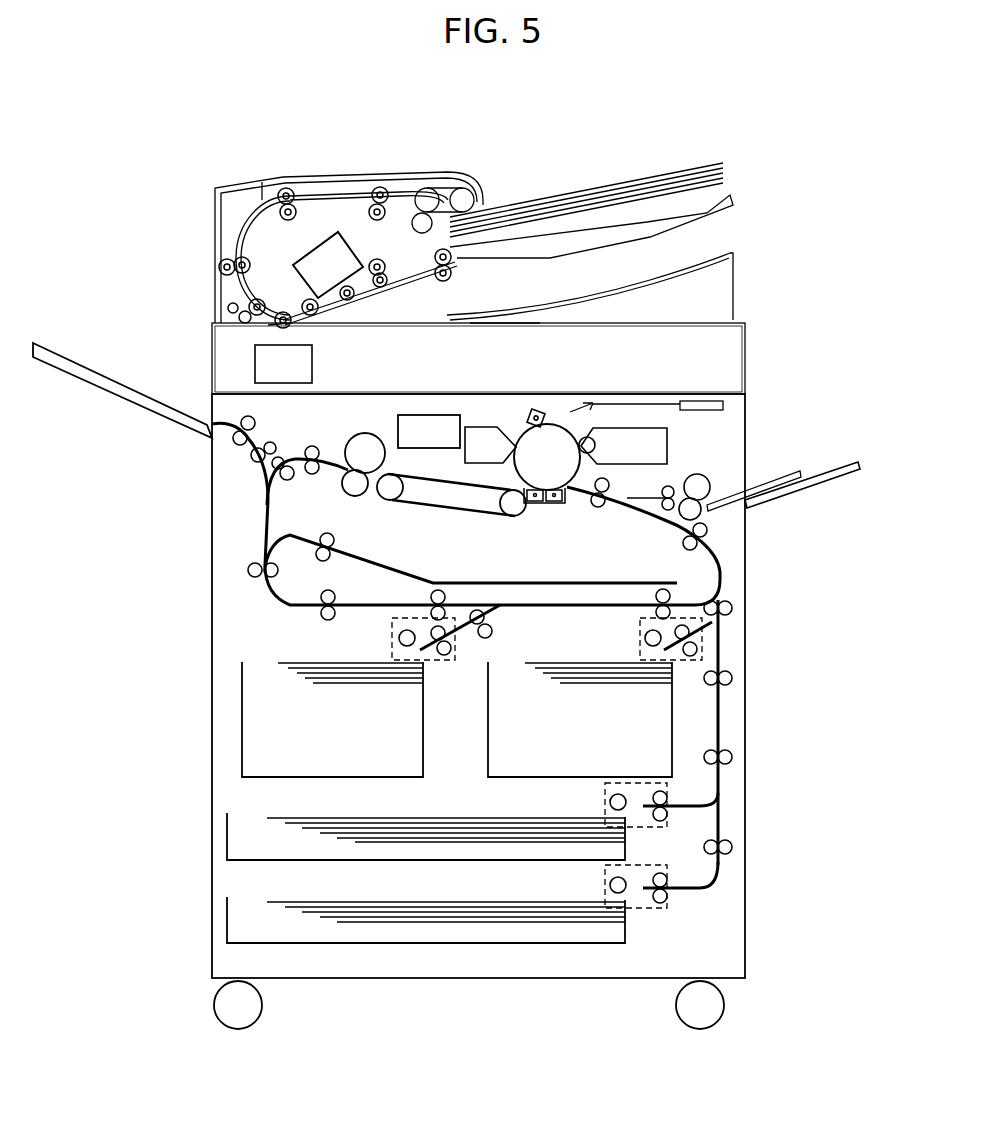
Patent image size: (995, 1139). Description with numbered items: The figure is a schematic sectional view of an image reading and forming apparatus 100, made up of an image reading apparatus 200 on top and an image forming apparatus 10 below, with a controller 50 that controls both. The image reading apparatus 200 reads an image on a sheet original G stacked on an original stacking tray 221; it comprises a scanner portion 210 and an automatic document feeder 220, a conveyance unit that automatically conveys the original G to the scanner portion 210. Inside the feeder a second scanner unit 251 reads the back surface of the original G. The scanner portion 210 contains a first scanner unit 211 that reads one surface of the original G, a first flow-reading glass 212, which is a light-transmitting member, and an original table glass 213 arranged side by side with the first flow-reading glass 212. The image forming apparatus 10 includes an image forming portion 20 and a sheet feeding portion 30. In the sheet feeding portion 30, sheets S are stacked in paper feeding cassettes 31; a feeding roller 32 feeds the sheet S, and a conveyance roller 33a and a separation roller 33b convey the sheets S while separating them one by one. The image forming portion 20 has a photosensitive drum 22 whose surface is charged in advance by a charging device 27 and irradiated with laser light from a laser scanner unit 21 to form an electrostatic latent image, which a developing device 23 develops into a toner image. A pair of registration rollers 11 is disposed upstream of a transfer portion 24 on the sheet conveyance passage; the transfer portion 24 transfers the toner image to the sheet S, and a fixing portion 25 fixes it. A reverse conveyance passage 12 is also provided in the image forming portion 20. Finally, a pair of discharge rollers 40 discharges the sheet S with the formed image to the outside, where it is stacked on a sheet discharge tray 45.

The image reading and forming apparatus 100 is at (630, 131).
The image reading apparatus 200 is at (822, 198).
The automatic document feeder 220 is at (735, 242).
The original stacking tray 221 is at (645, 232).
The sheet original G is at (561, 198).
The second scanner unit 251 is at (320, 258).
The scanner portion 210 is at (753, 352).
The first flow-reading glass 212 is at (272, 330).
The first scanner unit 211 is at (312, 363).
The original table glass 213 is at (503, 327).
The image forming portion 20 is at (729, 432).
The laser scanner unit 21 is at (715, 397).
The sheet discharge tray 45 is at (127, 400).
The pair of discharge rollers 40 is at (238, 450).
The pair of registration rollers 11 is at (596, 507).
The reverse conveyance passage 12 is at (374, 604).
The fixing portion 25 is at (347, 443).
The controller 50 is at (398, 433).
The transfer portion 24 is at (545, 504).
The photosensitive drum 22 is at (527, 431).
The charging device 27 is at (539, 410).
The developing device 23 is at (669, 445).
The image forming apparatus 10 is at (731, 714).
The sheet feeding portion 30 is at (731, 827).
The paper feeding cassette 31 is at (242, 740).
The sheet S is at (305, 664).
The feeding roller 32 is at (399, 639).
The conveyance roller 33a is at (431, 630).
The separation roller 33b is at (444, 655).